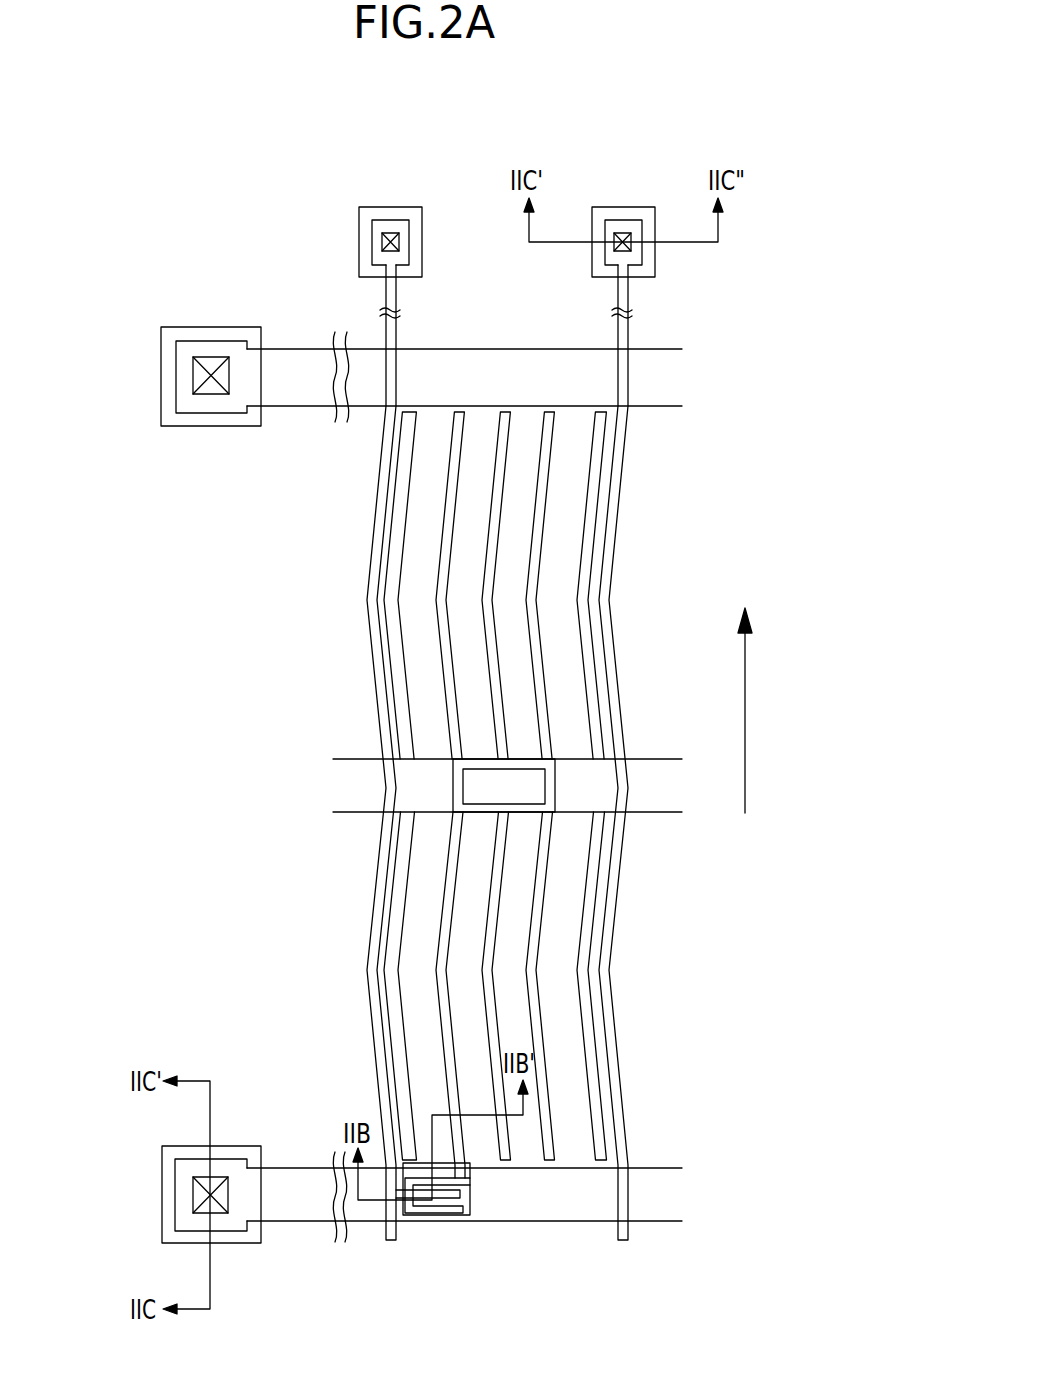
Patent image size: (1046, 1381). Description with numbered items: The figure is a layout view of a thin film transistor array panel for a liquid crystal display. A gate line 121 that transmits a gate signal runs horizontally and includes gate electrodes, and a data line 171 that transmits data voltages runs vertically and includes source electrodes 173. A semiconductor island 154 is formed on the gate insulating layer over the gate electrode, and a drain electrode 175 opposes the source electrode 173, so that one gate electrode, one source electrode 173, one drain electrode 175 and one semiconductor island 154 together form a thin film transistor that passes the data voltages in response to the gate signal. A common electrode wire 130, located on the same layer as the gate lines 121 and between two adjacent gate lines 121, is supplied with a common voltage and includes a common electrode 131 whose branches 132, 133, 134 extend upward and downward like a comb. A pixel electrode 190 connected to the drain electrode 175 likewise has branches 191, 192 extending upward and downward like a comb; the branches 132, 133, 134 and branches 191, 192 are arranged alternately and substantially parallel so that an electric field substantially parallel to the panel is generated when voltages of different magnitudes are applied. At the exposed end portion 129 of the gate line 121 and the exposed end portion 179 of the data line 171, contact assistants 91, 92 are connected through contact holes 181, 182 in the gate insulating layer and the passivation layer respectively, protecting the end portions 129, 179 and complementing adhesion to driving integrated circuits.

The contact assistant 92 is at (599, 207).
The contact hole 182 is at (624, 233).
The end portion of data line 179 is at (636, 221).
The data line 171 is at (371, 975).
The common electrode 131 is at (583, 786).
The branch of common electrode 132 is at (411, 467).
The branch of common electrode 133 is at (501, 507).
The branch of common electrode 134 is at (594, 540).
The common electrode wire 130 is at (653, 759).
The pixel electrode 190 is at (595, 795).
The branch of pixel electrode 191 is at (450, 928).
The branch of pixel electrode 192 is at (539, 997).
The gate line 121 is at (573, 1222).
The end portion of gate line 129 is at (175, 1162).
The contact hole 181 is at (193, 1195).
The contact assistant 91 is at (162, 1235).
The semiconductor island 154 is at (448, 1215).
The source electrode 173 is at (420, 1213).
The drain electrode 175 is at (470, 1185).